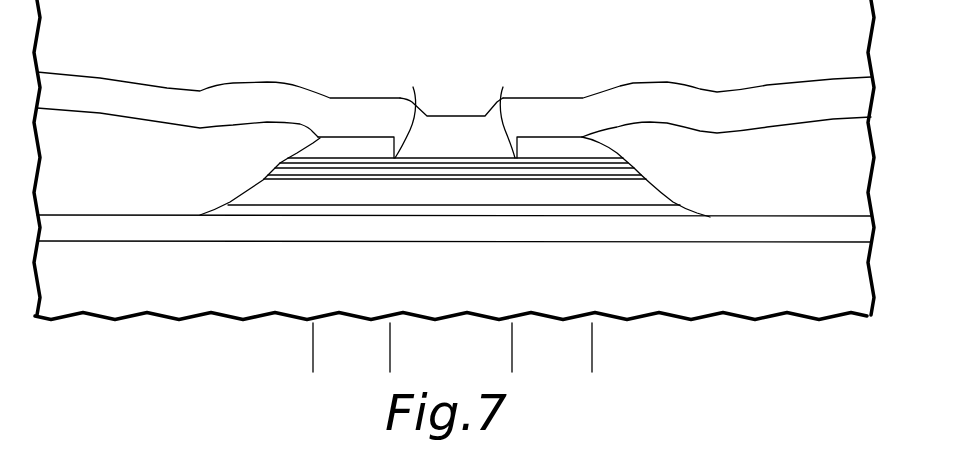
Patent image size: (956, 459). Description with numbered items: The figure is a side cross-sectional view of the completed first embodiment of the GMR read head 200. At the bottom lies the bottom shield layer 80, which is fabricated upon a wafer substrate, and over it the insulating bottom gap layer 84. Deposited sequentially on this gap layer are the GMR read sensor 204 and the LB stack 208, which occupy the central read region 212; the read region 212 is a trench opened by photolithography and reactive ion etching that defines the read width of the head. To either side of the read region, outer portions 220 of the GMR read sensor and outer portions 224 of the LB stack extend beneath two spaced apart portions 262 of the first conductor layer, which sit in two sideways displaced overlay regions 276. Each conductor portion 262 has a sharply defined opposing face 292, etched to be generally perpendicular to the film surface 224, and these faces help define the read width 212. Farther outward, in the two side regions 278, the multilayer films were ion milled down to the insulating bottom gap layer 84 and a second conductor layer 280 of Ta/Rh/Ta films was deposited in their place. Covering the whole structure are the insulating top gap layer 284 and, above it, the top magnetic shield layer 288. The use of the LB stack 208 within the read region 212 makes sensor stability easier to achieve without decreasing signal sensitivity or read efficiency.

The bottom shield layer 80 is at (675, 293).
The insulating bottom gap layer 84 is at (758, 228).
The GMR read head 200 is at (646, 62).
The GMR read sensor 204 is at (460, 192).
The LB stack 208 is at (478, 148).
The read region 212 is at (460, 70).
The outer portions of the GMR read sensor 220 is at (343, 192).
The outer portions of the LB stack 224 is at (455, 176).
The spaced apart portions of the first conductor layer 262 is at (365, 147).
The overlay regions 276 is at (365, 352).
The side regions 278 is at (110, 42).
The second conductor layer 280 is at (97, 173).
The insulating top gap layer 284 is at (863, 111).
The top magnetic shield layer 288 is at (238, 37).
The opposing face 292 is at (460, 109).